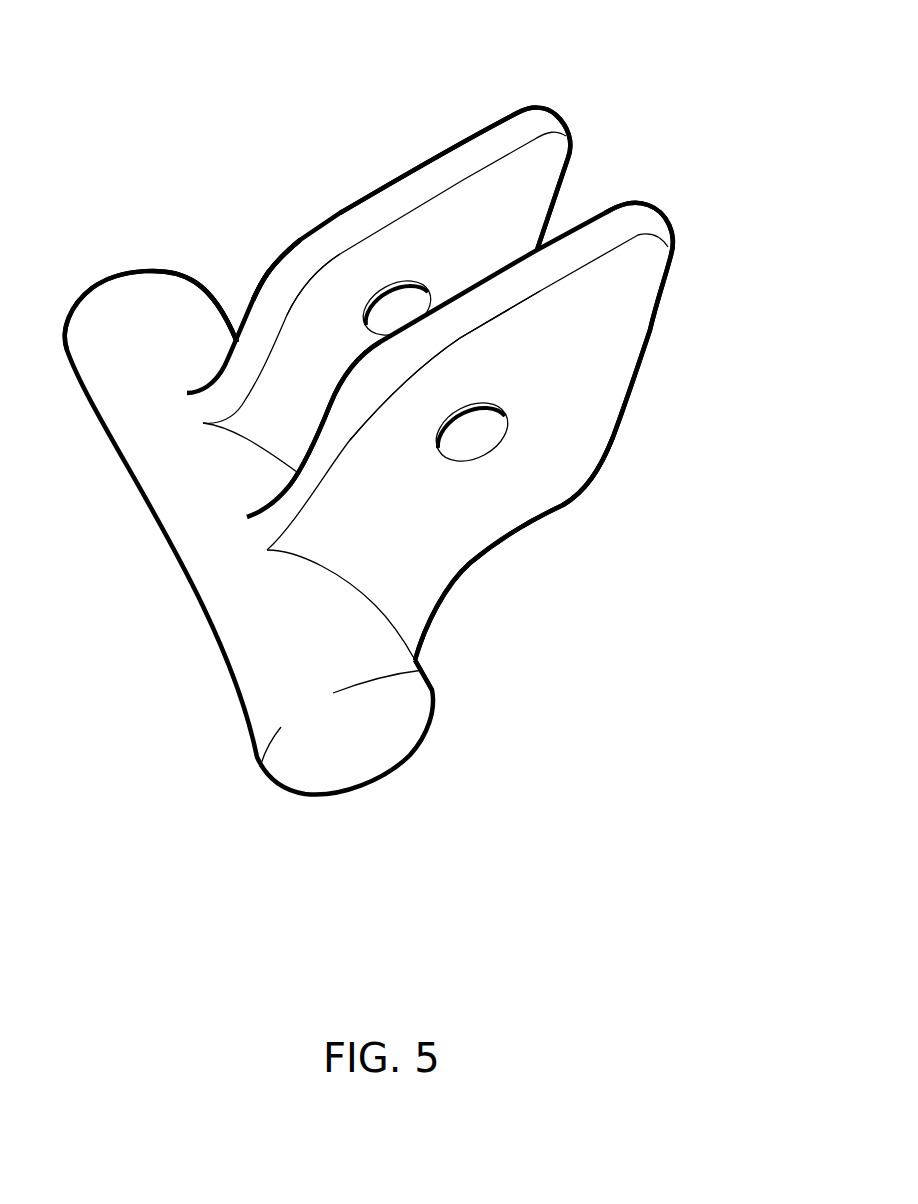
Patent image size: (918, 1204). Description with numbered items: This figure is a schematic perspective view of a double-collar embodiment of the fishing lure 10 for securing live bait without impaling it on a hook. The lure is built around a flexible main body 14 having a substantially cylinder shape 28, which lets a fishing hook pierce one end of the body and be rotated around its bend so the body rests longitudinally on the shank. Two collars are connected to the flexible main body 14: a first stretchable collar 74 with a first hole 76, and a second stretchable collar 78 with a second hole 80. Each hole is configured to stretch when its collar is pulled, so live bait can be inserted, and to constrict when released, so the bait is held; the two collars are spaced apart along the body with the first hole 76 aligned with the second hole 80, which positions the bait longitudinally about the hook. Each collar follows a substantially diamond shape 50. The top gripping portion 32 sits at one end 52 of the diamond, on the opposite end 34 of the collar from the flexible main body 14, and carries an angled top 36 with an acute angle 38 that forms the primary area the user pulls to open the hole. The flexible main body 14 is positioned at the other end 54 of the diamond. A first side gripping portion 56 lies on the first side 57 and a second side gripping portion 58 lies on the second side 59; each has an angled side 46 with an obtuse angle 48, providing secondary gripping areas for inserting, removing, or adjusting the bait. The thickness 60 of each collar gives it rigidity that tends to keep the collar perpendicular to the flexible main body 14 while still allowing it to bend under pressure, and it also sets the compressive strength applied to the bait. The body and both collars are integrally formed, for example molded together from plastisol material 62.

The fishing lure 10 is at (727, 492).
The flexible main body 14 is at (263, 615).
The substantially cylinder shape 28 is at (83, 268).
The top gripping portion 32 is at (600, 185).
The opposite end 34 is at (229, 283).
The angled top 36 is at (572, 100).
The acute angle 38 is at (548, 202).
The angled side 46 is at (279, 265).
The obtuse angle 48 is at (280, 327).
The substantially diamond shape 50 is at (411, 103).
The one end 52 is at (547, 68).
The other end 54 is at (255, 232).
The first side gripping portion 56 is at (312, 212).
The first side 57 is at (267, 275).
The second side gripping portion 58 is at (581, 398).
The second side 59 is at (597, 478).
The thickness 60 is at (430, 196).
The plastisol material 62 is at (513, 512).
The first stretchable collar 74 is at (645, 338).
The first hole 76 is at (474, 458).
The second stretchable collar 78 is at (487, 138).
The second hole 80 is at (393, 287).